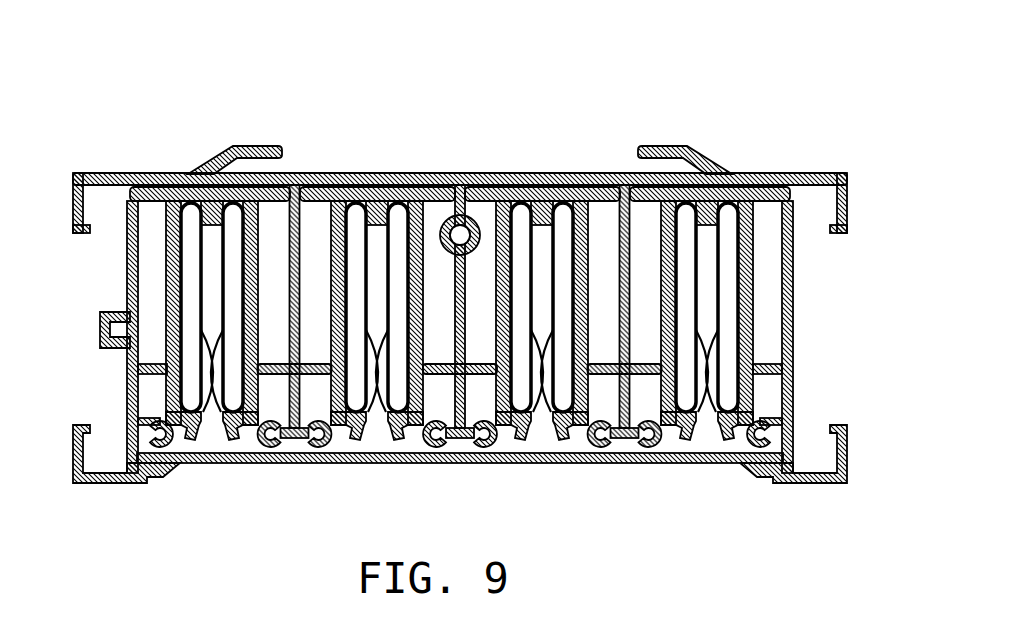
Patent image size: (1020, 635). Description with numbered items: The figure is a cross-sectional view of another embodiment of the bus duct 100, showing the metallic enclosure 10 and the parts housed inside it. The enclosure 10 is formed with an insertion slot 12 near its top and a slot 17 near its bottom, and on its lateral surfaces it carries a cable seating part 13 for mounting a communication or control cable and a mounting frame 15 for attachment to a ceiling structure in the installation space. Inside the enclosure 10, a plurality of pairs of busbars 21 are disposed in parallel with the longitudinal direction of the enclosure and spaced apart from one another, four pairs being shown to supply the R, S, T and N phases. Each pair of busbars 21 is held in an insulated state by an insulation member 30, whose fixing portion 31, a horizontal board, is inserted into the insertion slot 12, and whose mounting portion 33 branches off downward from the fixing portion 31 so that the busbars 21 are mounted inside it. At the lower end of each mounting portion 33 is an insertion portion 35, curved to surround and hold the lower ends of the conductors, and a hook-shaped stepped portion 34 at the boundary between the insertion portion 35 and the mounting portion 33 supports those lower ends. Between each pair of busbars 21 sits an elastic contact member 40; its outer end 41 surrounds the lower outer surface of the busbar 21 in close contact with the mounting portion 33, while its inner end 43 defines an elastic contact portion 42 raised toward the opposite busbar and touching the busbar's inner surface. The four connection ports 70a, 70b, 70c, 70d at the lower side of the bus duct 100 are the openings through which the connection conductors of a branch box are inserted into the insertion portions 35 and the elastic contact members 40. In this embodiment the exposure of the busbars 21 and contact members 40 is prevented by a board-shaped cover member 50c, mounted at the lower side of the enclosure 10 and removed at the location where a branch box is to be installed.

The bus duct 100 is at (463, 274).
The enclosure 10 is at (157, 174).
The insertion slot 12 is at (140, 232).
The cable seating part 13 is at (100, 320).
The mounting frame 15 is at (256, 147).
The slot 17 is at (157, 410).
The busbar 21 is at (743, 280).
The insulation member 30 is at (588, 276).
The fixing portion 31 is at (770, 198).
The mounting portion 33 is at (764, 374).
The hook-shaped stepped portion 34 is at (682, 422).
The insertion portion 35 is at (725, 428).
The elastic contact member 40 is at (380, 266).
The outer end 41 is at (395, 360).
The elastic contact portion 42 is at (461, 200).
The inner end 43 is at (380, 345).
The cover member 50c is at (234, 465).
The connection port 70a is at (195, 372).
The connection port 70b is at (410, 442).
The connection port 70c is at (572, 442).
The connection port 70d is at (720, 380).